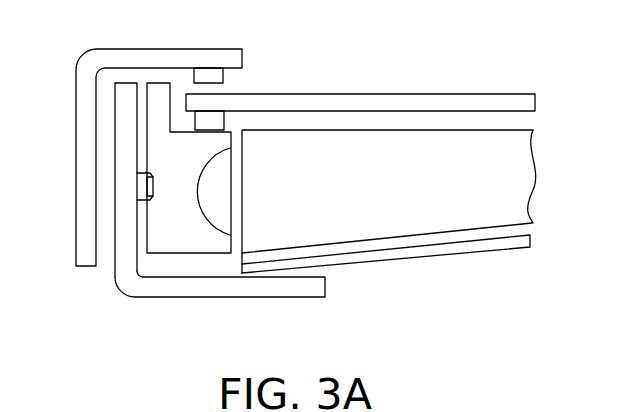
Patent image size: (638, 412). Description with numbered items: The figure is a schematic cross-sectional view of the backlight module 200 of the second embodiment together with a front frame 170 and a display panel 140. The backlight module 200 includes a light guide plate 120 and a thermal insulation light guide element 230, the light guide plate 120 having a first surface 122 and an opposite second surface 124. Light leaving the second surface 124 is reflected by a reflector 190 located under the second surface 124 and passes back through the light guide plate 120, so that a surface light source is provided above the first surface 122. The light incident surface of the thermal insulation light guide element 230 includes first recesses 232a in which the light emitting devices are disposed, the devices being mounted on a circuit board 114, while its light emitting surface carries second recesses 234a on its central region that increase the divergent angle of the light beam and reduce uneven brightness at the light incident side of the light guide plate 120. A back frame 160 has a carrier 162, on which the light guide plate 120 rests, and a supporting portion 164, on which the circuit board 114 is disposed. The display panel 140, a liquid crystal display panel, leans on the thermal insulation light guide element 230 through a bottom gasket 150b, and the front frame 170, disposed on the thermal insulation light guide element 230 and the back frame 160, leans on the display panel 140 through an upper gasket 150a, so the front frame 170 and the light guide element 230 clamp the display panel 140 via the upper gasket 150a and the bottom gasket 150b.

The backlight module 200 is at (567, 343).
The light guide plate 120 is at (517, 180).
The first surface 122 is at (501, 130).
The second surface 124 is at (519, 227).
The display panel 140 is at (455, 99).
The upper gasket 150a is at (217, 122).
The bottom gasket 150b is at (216, 76).
The back frame 160 is at (197, 228).
The carrier 162 is at (220, 303).
The supporting portion 164 is at (122, 205).
The front frame 170 is at (85, 122).
The circuit board 114 is at (138, 185).
The thermal insulation light guide element 230 is at (198, 240).
The first recesses 232a is at (144, 172).
The second recesses 234a is at (216, 190).
The reflector 190 is at (436, 250).